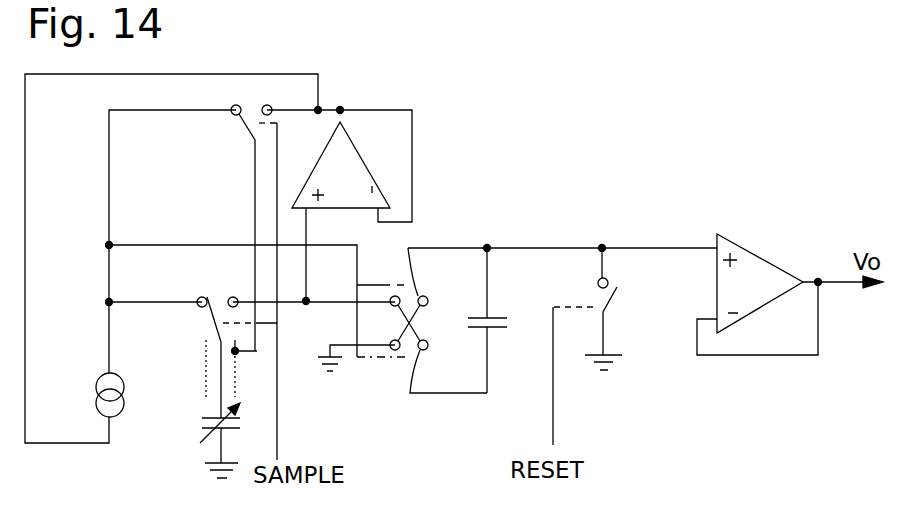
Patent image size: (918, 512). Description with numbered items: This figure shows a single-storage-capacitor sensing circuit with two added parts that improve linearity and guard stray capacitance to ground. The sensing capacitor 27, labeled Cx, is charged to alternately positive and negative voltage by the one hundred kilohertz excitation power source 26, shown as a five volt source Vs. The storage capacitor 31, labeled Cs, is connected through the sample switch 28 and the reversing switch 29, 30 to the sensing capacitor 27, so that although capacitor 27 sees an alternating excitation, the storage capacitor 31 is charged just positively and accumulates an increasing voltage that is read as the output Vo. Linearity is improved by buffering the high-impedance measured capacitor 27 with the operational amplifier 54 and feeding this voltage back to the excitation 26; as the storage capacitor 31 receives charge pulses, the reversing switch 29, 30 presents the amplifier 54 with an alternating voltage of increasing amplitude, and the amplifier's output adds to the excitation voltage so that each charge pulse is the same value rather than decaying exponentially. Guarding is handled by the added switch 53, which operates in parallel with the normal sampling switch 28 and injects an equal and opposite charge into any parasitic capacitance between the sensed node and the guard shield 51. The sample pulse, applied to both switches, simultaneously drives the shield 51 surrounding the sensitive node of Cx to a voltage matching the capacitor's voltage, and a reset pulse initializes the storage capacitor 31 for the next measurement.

The excitation power source 26 is at (98, 367).
The sensing capacitor 27 is at (195, 415).
The sample switch 28 is at (197, 323).
The reversing switch 29 is at (423, 278).
The reversing switch 30 is at (402, 372).
The storage capacitor 31 is at (493, 333).
The guard shield 51 is at (243, 378).
The guard switch 53 is at (232, 134).
The operational amplifier 54 is at (363, 143).